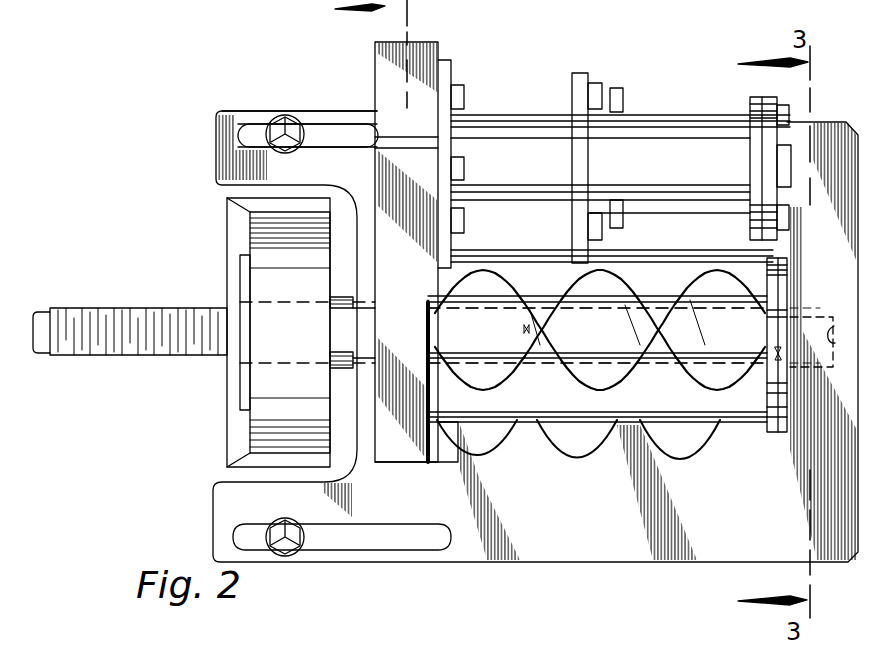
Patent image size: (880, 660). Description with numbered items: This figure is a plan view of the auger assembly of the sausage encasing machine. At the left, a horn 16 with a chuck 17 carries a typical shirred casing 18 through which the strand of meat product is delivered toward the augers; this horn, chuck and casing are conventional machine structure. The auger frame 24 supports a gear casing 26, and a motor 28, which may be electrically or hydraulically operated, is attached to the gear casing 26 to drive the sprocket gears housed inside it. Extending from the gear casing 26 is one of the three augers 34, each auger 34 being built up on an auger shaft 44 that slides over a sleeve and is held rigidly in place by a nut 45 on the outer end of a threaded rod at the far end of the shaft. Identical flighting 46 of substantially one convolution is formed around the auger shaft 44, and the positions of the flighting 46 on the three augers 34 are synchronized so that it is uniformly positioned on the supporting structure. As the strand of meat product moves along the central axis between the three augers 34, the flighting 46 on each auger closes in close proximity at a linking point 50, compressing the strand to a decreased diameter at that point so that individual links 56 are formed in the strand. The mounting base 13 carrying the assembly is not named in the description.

The base plate 13 is at (335, 497).
The horn 16 is at (40, 308).
The chuck 17 is at (228, 300).
The shirred casing 18 is at (126, 305).
The auger frame 24 is at (357, 104).
The gear casing 26 is at (372, 50).
The motor 28 is at (680, 120).
The auger 34 is at (720, 470).
The auger shaft 44 is at (700, 455).
The nut 45 is at (784, 368).
The flighting 46 is at (640, 425).
The linking point 50 is at (520, 390).
The link 56 is at (807, 317).